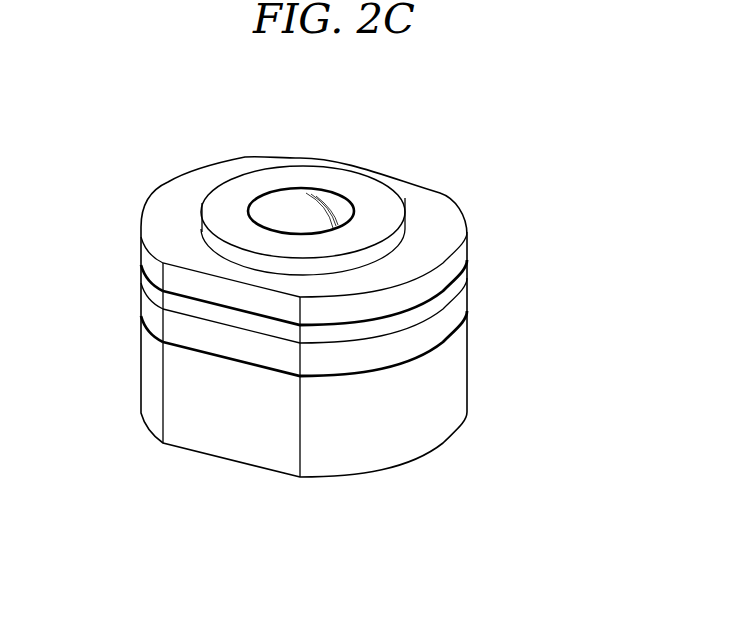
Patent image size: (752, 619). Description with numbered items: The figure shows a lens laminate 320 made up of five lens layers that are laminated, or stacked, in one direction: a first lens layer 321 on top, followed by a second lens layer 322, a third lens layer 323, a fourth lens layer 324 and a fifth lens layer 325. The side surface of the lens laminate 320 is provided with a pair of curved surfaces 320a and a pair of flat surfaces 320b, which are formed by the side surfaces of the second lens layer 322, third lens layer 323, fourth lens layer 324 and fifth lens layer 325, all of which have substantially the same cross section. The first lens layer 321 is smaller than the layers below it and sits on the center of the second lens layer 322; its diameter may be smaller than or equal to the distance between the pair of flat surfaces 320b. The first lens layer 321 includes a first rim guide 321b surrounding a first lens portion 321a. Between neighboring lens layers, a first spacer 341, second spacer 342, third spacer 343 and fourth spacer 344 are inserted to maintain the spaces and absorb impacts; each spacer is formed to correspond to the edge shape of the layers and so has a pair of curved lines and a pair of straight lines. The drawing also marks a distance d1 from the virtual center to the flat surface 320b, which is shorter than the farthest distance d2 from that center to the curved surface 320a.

The lens laminate 320 is at (375, 559).
The curved surfaces 320a is at (348, 478).
The flat surfaces 320b is at (246, 476).
The first lens layer 321 is at (307, 170).
The first lens portion 321a is at (301, 166).
The first rim guide 321b is at (367, 192).
The second lens layer 322 is at (469, 243).
The third lens layer 323 is at (458, 285).
The fourth lens layer 324 is at (458, 315).
The fifth lens layer 325 is at (458, 367).
The first spacer 341 is at (201, 232).
The second spacer 342 is at (141, 270).
The third spacer 343 is at (141, 293).
The fourth spacer 344 is at (141, 320).
The distance to flat surface d1 is at (235, 281).
The farthest distance to curved surface d2 is at (442, 260).